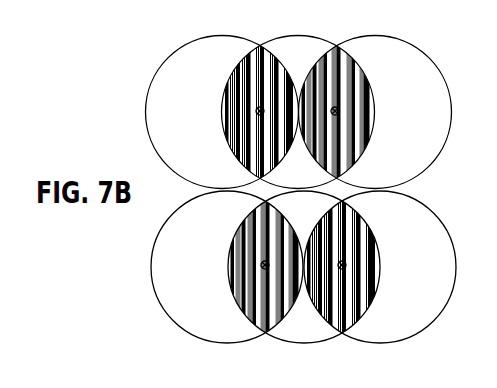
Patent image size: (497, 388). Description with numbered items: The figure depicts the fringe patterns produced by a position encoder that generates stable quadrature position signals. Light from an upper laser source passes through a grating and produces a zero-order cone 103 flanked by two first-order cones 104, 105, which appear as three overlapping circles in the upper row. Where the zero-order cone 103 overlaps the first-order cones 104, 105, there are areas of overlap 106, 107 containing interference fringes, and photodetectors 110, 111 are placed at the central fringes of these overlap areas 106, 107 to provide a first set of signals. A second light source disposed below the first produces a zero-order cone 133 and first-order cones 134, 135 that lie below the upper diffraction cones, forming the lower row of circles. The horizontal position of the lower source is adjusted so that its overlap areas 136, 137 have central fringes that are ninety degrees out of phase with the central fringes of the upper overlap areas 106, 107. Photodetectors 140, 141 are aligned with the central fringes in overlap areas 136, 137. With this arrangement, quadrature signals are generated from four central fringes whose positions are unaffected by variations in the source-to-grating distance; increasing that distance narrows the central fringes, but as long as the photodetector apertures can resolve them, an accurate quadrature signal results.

The zero-order cone 103 is at (308, 36).
The first-order cone 104 is at (235, 35).
The first-order cone 105 is at (388, 35).
The area of overlap 106 is at (272, 58).
The area of overlap 107 is at (338, 45).
The photodetector 110 is at (256, 111).
The photodetector 111 is at (339, 111).
The zero-order cone 133 is at (297, 344).
The first-order cone 134 is at (225, 345).
The first-order cone 135 is at (385, 345).
The overlap area 136 is at (268, 318).
The overlap area 137 is at (340, 327).
The photodetector 140 is at (261, 265).
The photodetector 141 is at (346, 265).